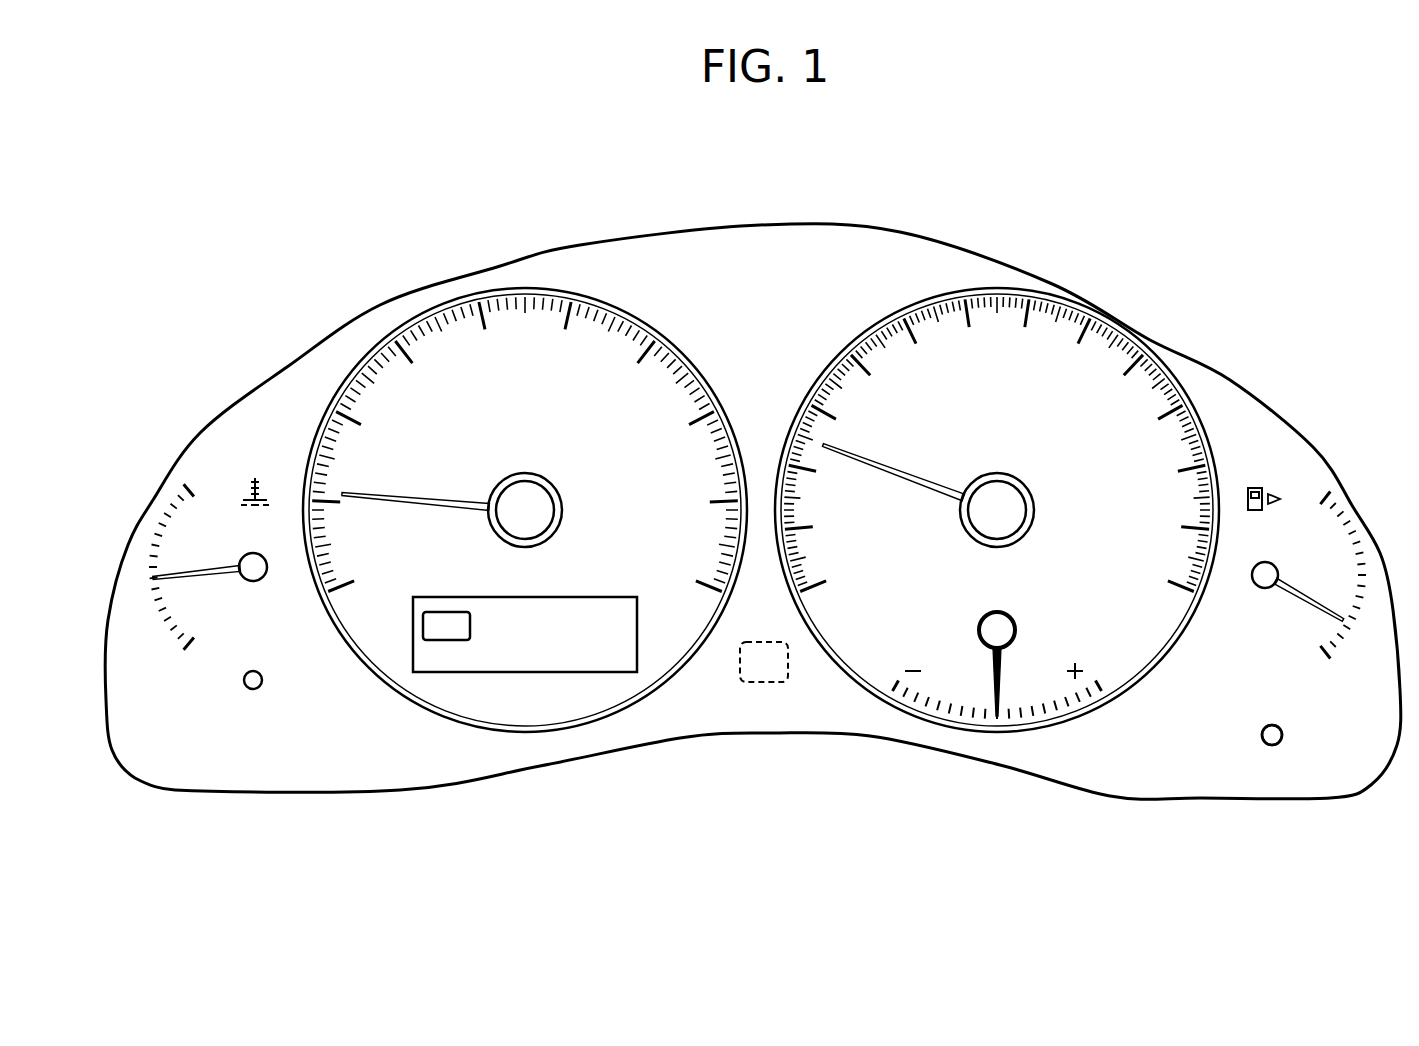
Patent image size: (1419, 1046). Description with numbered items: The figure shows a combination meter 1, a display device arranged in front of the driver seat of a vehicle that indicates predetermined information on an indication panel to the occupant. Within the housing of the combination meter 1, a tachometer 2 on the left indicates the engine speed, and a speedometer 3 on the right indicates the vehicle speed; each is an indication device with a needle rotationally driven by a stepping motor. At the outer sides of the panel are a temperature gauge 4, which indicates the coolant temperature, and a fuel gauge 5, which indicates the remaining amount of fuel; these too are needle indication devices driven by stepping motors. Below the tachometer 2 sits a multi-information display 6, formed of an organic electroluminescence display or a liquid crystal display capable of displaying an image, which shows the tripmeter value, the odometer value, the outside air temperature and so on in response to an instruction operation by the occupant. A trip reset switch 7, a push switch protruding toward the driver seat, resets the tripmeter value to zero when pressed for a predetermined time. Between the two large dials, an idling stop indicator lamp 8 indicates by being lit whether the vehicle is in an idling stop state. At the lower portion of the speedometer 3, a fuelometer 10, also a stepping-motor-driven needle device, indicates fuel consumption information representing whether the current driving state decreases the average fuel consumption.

The combination meter 1 is at (922, 238).
The tachometer 2 is at (626, 280).
The speedometer 3 is at (849, 286).
The temperature gauge 4 is at (206, 462).
The fuel gauge 5 is at (1303, 472).
The multi-information display 6 is at (577, 672).
The trip reset switch 7 is at (1272, 745).
The idling stop indicator lamp 8 is at (771, 683).
The fuelometer 10 is at (1042, 752).